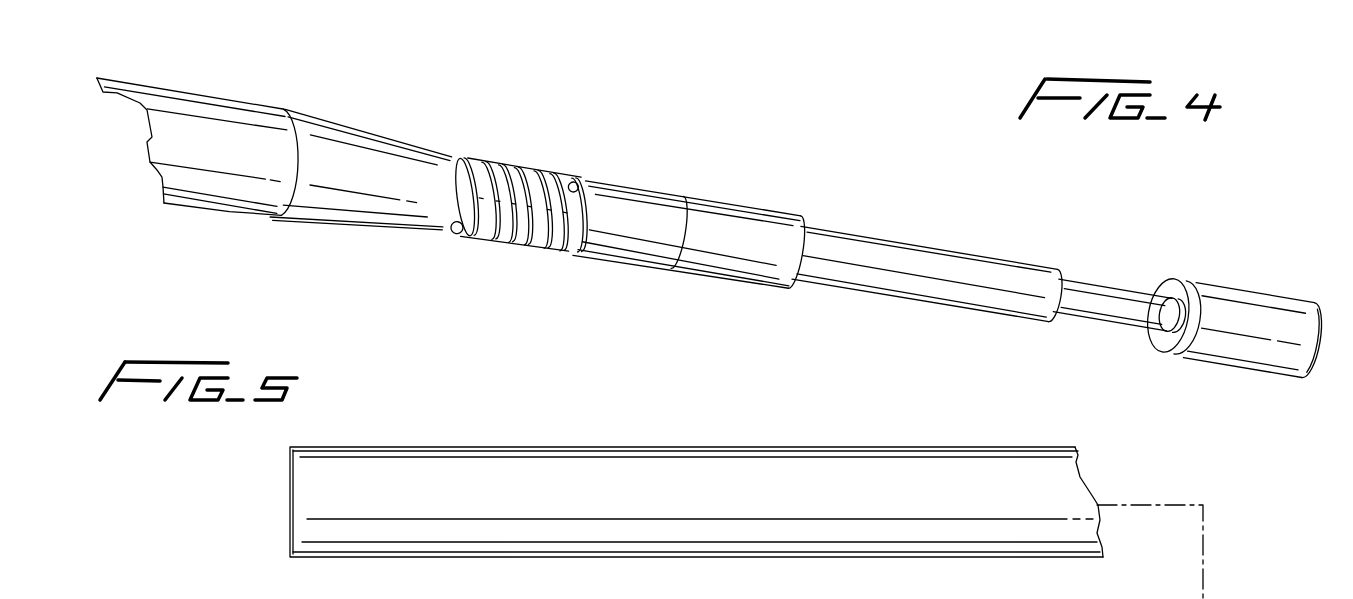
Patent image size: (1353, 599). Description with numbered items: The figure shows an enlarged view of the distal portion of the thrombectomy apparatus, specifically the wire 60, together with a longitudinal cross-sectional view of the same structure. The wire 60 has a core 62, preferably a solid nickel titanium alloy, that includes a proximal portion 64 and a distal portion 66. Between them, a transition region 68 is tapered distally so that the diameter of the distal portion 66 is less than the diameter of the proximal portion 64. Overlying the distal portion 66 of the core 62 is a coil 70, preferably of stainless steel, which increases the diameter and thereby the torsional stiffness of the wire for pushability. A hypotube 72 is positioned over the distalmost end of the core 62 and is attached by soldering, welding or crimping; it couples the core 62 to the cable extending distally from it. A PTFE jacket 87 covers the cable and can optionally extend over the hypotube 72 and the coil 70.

In FIG. 4, the wire 60 is at (942, 227).
In FIG. 4, the core 62 is at (230, 112).
In FIG. 5, the core 62 is at (702, 482).
In FIG. 5, the proximal portion 64 is at (603, 418).
In FIG. 4, the distal portion 66 is at (512, 189).
In FIG. 4, the transition region 68 is at (403, 207).
In FIG. 4, the coil 70 is at (508, 243).
In FIG. 4, the hypotube 72 is at (613, 203).
In FIG. 4, the PTFE jacket 87 is at (983, 273).